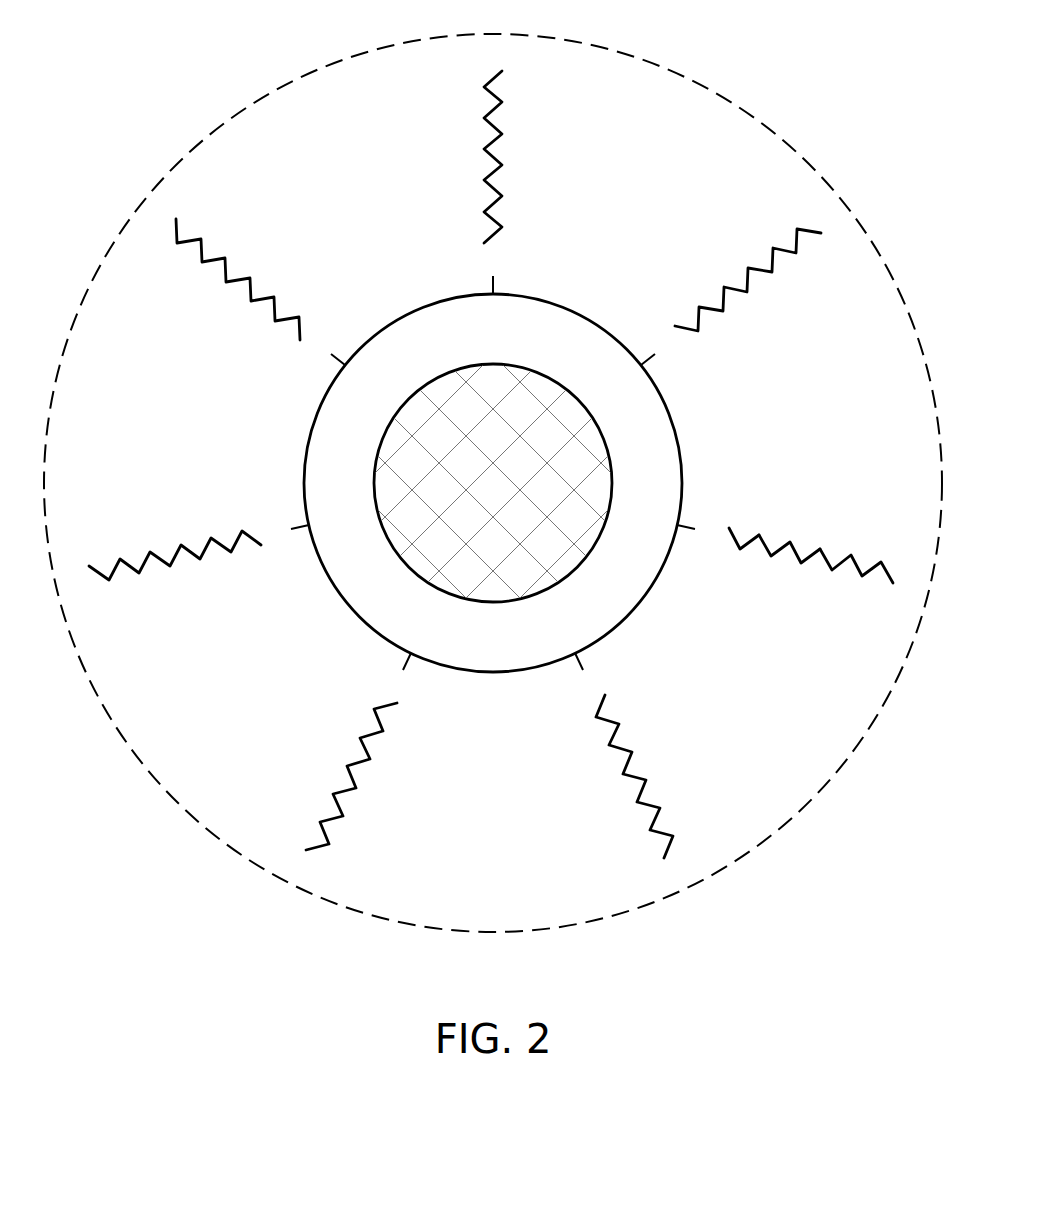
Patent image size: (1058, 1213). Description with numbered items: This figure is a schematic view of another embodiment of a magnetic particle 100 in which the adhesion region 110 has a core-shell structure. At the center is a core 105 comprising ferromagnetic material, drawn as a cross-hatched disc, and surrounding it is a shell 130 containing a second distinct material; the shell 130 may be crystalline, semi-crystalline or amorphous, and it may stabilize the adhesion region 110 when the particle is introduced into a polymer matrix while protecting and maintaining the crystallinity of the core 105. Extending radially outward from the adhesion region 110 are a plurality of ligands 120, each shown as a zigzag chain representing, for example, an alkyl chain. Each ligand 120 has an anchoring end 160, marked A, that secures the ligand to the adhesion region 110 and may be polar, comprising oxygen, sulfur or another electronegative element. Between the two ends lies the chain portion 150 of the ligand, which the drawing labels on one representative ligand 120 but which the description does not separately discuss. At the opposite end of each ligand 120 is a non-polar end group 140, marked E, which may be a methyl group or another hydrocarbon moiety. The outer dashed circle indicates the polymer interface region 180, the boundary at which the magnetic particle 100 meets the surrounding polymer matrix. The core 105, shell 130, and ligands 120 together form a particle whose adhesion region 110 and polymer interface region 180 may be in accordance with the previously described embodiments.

The magnetic particle 100 is at (498, 483).
The core 105 is at (608, 425).
The adhesion region 110 is at (631, 620).
The ligand 120 is at (814, 583).
The shell 130 is at (663, 461).
The non-polar end group 140 is at (903, 598).
The intermediate portion 150 is at (789, 556).
The anchoring end 160 is at (713, 552).
The polymer interface region 180 is at (880, 318).